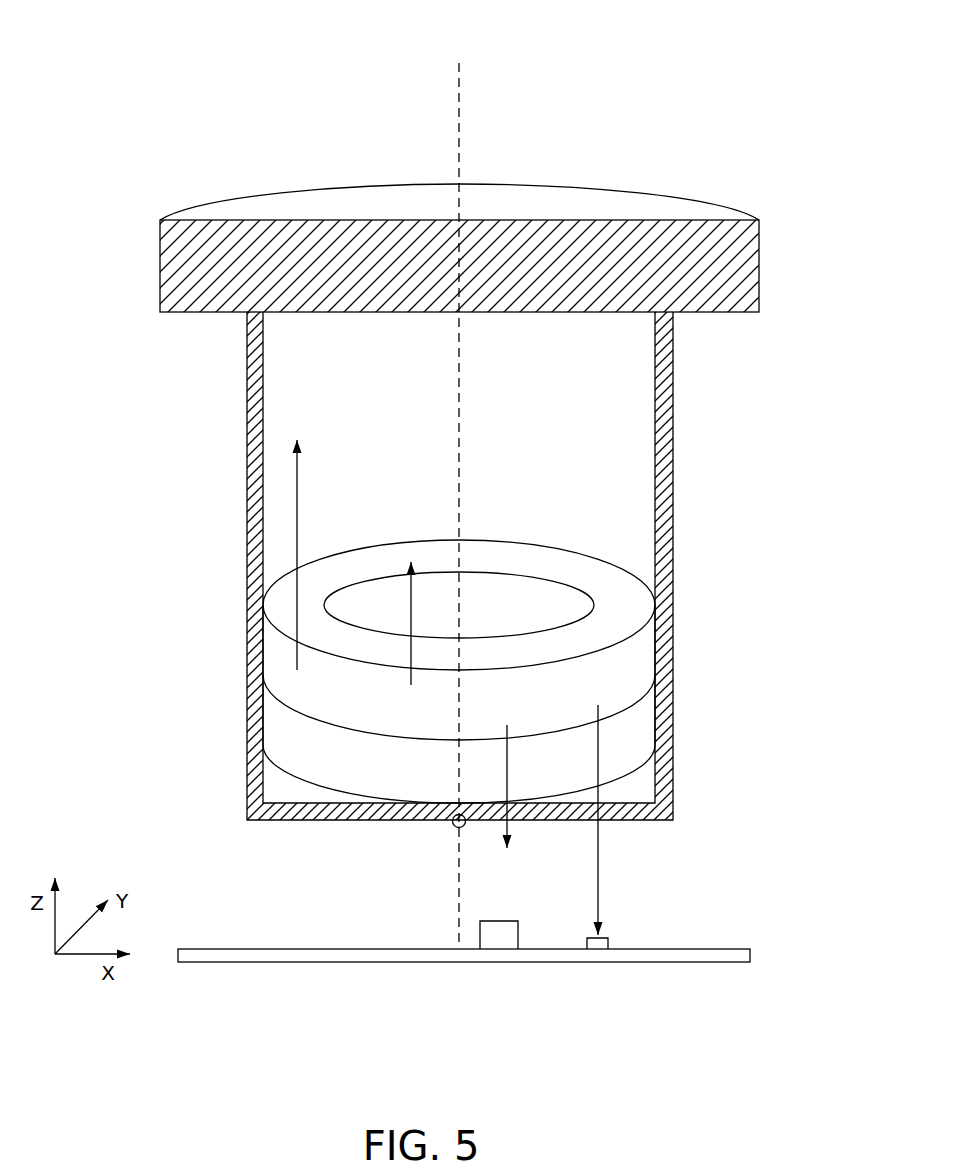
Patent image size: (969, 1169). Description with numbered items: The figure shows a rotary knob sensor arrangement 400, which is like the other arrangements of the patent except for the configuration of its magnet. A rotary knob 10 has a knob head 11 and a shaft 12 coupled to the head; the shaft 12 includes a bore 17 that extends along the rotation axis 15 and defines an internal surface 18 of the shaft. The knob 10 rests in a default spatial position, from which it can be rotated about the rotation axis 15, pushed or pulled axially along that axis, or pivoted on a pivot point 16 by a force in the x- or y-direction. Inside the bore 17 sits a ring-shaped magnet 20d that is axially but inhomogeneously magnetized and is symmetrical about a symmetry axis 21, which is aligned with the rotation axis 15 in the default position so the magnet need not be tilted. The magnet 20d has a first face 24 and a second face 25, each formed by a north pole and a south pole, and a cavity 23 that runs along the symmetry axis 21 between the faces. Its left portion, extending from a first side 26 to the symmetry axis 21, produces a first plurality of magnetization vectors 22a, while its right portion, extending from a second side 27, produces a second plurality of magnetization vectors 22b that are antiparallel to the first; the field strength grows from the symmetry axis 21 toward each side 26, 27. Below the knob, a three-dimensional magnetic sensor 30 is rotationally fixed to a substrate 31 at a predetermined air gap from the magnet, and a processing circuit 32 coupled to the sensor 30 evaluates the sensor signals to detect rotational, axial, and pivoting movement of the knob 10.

The rotary knob sensor arrangement 400 is at (150, 45).
The rotary knob 10 is at (163, 212).
The knob head 11 is at (160, 265).
The shaft 12 is at (247, 372).
The rotation axis 15 is at (509, 505).
The symmetry axis 21 is at (460, 118).
The pivot point 16 is at (452, 826).
The bore 17 is at (623, 425).
The internal surface 18 is at (266, 426).
The magnet 20d is at (275, 596).
The first plurality of magnetization vectors 22a is at (297, 495).
The second plurality of magnetization vectors 22b is at (508, 790).
The cavity 23 is at (541, 604).
The first face 24 is at (375, 565).
The second face 25 is at (295, 775).
The first side 26 is at (260, 710).
The second side 27 is at (658, 707).
The 3D magnetic sensor 30 is at (598, 945).
The substrate 31 is at (752, 952).
The processing circuit 32 is at (500, 942).